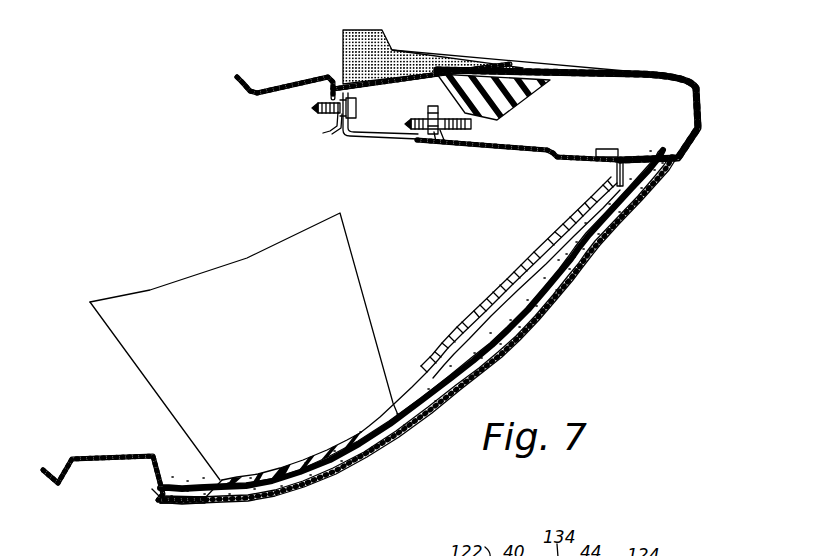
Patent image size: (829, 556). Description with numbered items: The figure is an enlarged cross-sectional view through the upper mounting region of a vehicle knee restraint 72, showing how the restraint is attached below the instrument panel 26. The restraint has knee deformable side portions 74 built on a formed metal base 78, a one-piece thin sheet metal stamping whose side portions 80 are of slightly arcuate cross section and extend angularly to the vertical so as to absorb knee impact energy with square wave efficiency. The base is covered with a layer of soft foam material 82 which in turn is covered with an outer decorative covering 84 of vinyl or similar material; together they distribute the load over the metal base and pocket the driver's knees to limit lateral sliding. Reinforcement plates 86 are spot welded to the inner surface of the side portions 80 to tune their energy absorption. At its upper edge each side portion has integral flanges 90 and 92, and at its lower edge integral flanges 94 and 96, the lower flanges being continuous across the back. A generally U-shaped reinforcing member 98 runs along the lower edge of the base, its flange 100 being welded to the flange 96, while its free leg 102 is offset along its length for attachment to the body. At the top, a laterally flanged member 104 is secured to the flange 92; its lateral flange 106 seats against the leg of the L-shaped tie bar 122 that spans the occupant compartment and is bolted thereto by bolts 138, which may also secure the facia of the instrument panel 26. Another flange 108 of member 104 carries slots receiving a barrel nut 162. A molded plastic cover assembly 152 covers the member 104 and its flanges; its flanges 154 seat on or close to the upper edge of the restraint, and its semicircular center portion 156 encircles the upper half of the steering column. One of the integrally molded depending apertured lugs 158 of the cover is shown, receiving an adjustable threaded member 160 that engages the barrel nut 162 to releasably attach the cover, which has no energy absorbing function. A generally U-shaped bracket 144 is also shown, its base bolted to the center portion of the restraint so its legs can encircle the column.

The instrument panel 26 is at (424, 60).
The knee restraint 72 is at (432, 352).
The knee deformable side portions 74 is at (590, 273).
The metal base 78 is at (413, 380).
The knee deformable side portions of the base 80 is at (357, 434).
The soft foam material 82 is at (503, 307).
The outer decorative covering 84 is at (535, 330).
The reinforcement plates 86 is at (533, 262).
The upper flange 90 is at (616, 176).
The upper flange 92 is at (590, 148).
The lower flange 94 is at (214, 481).
The lower flange 96 is at (171, 502).
The U-shaped reinforcing member 98 is at (108, 453).
The flange of reinforcing member 100 is at (178, 496).
The free leg 102 is at (75, 473).
The laterally flanged member 104 is at (500, 146).
The lateral flange 106 is at (336, 134).
The flange 108 is at (436, 136).
The tie bar 122 is at (275, 72).
The bolts 138 is at (362, 110).
The U-shaped bracket 144 is at (262, 262).
The cover assembly 152 is at (640, 73).
The flanges of cover assembly 154 is at (698, 108).
The semicircular center portion 156 is at (370, 47).
The depending apertured lug 158 is at (498, 90).
The adjustable threaded member 160 is at (463, 129).
The barrel nuts 162 is at (430, 118).